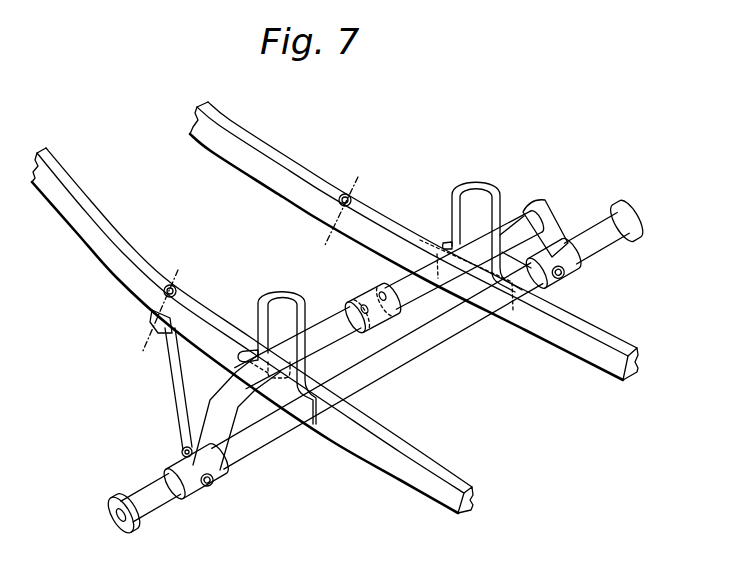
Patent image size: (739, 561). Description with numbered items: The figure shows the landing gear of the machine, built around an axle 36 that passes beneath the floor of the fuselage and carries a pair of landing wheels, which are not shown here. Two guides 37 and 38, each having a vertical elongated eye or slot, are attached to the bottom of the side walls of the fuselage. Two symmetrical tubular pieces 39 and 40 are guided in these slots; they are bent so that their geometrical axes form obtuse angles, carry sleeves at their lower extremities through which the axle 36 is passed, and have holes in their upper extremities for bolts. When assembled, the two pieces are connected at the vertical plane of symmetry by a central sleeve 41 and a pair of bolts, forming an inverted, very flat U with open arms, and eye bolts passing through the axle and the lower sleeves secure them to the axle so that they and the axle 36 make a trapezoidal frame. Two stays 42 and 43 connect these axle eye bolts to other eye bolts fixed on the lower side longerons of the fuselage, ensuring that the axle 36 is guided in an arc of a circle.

The axle 36 is at (245, 438).
The guide 37 is at (268, 298).
The guide 38 is at (473, 180).
The tubular piece 39 is at (212, 422).
The tubular piece 40 is at (545, 224).
The central sleeve 41 is at (354, 303).
The stay 42 is at (166, 347).
The stay 43 is at (424, 240).